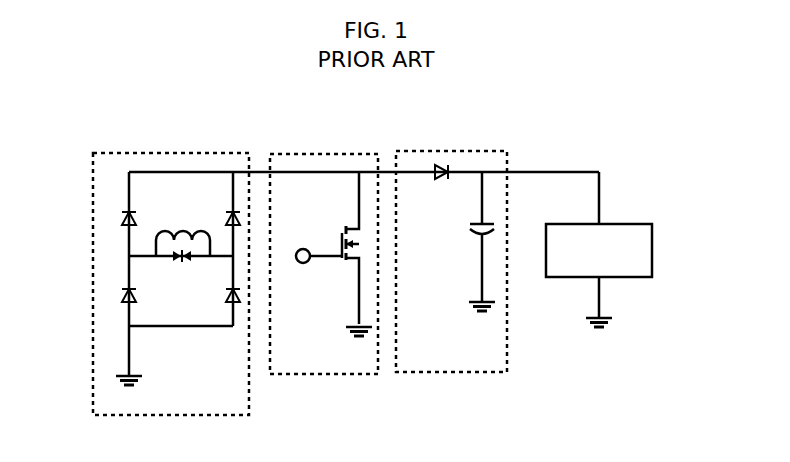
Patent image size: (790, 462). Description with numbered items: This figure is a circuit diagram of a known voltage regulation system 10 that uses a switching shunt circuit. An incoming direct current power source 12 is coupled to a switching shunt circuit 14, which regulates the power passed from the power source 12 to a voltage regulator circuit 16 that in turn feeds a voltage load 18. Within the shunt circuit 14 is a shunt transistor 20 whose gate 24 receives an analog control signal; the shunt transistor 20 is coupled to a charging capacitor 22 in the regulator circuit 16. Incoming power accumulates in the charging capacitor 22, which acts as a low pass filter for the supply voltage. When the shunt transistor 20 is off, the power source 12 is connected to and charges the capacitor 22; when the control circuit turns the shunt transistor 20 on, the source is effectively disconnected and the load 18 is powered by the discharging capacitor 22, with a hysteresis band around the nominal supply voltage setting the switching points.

The voltage regulation system 10 is at (373, 134).
The direct current power source 12 is at (113, 152).
The switching shunt circuit 14 is at (322, 153).
The voltage regulator circuit 16 is at (476, 151).
The voltage load 18 is at (632, 222).
The shunt transistor 20 is at (351, 259).
The charging capacitor 22 is at (494, 226).
The gate 24 is at (301, 249).